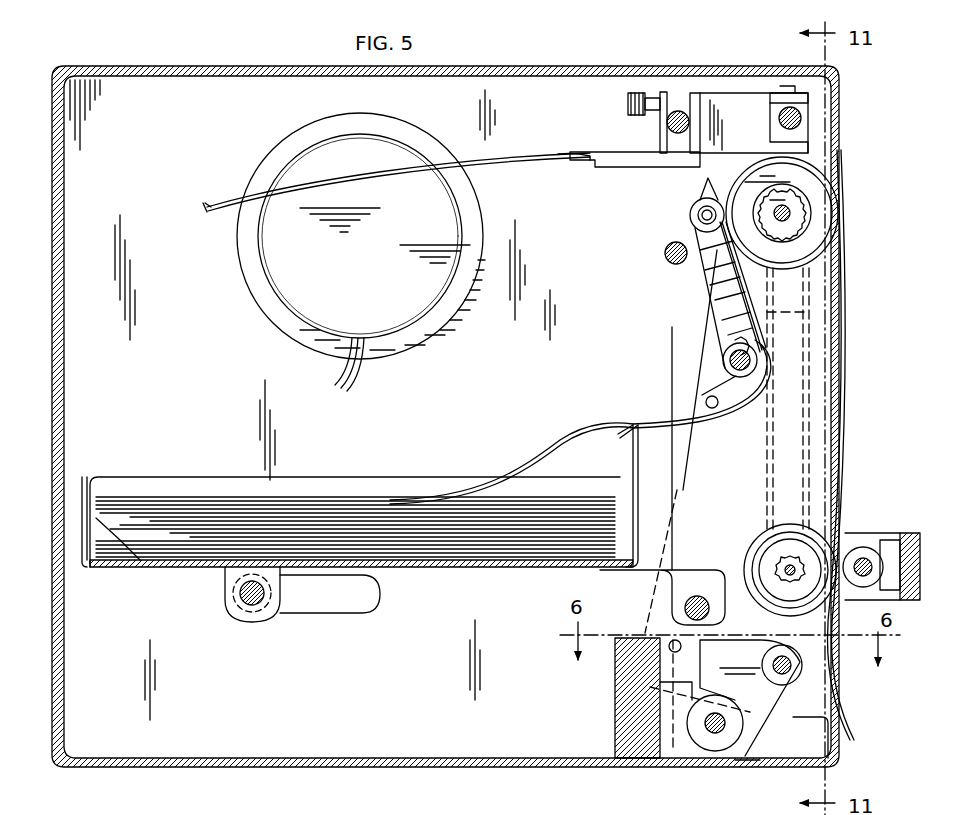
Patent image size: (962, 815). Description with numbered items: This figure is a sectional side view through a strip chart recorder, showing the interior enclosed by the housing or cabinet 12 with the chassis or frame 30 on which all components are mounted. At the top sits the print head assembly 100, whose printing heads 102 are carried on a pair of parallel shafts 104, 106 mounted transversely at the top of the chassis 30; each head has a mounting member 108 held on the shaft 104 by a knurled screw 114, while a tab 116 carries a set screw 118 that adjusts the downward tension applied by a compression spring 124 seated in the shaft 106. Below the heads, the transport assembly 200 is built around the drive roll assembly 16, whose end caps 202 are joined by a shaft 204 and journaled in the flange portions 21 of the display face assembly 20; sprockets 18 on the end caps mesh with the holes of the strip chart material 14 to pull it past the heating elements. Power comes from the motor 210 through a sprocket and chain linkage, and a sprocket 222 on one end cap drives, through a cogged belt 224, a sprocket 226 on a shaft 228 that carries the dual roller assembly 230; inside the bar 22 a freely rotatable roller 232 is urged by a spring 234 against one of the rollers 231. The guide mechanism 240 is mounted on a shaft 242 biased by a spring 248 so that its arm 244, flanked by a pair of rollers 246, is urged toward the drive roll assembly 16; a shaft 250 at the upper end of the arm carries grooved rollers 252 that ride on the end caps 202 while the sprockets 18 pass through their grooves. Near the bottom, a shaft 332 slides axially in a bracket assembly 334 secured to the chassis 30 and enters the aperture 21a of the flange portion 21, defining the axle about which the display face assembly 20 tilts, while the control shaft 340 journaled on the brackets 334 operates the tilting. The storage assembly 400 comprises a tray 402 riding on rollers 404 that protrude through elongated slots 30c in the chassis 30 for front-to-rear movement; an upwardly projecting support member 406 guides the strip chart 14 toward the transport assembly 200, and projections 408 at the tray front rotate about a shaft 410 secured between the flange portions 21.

The housing or cabinet 12 is at (271, 66).
The strip chart material 14 is at (565, 447).
The drive roll assembly 16 is at (846, 206).
The sprockets 18 is at (822, 188).
The display face assembly 20 is at (840, 426).
The flange portions 21 is at (812, 468).
The aperture 21a is at (678, 652).
The bar 22 is at (898, 560).
The chassis or frame 30 is at (222, 356).
The elongated slots 30c is at (380, 600).
The print head assembly 100 is at (594, 114).
The printing heads 102 is at (735, 92).
The shaft 104 is at (670, 126).
The shaft 106 is at (802, 118).
The mounting member 108 is at (706, 92).
The screw 114 is at (628, 102).
The tab 116 is at (810, 98).
The set screw 118 is at (228, 205).
The compression spring 124 is at (790, 143).
The transport assembly 200 is at (668, 233).
The end caps 202 is at (790, 258).
The shaft 204 is at (792, 218).
The motor 210 is at (384, 217).
The sprocket 222 is at (795, 205).
The cogged belt 224 is at (808, 500).
The sprocket 226 is at (778, 562).
The shaft 228 is at (783, 568).
The dual roller assembly 230 is at (762, 528).
The rollers 231 is at (776, 608).
The roller 232 is at (880, 560).
The spring 234 is at (882, 580).
The guide mechanism 240 is at (700, 298).
The shaft 242 is at (728, 364).
The arm 244 is at (735, 262).
The rollers 246 is at (720, 381).
The spring 248 is at (722, 342).
The shaft 250 is at (705, 218).
The roller 252 is at (690, 207).
The shaft 332 is at (800, 668).
The bracket assembly 334 is at (660, 670).
The control shaft 340 is at (712, 732).
The storage assembly 400 is at (436, 432).
The tray 402 is at (376, 478).
The rollers 404 is at (232, 592).
The support member 406 is at (631, 458).
The projections 408 is at (678, 582).
The shaft 410 is at (686, 607).